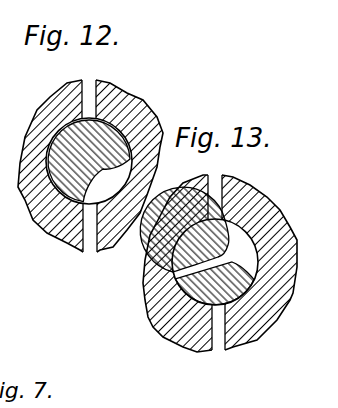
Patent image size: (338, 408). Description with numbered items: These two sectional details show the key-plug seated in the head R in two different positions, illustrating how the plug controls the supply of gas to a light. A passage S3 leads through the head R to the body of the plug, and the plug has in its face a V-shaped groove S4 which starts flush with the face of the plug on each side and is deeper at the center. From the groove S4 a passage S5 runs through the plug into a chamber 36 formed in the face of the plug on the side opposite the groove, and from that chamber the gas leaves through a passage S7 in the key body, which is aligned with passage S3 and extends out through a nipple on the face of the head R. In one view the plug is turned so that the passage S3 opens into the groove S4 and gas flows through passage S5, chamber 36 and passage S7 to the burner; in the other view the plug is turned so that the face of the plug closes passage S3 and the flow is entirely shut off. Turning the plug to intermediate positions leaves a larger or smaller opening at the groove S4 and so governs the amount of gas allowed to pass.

In FIG. 12, the head R is at (90, 166).
In FIG. 13, the head R is at (220, 259).
In FIG. 12, the passage S3 is at (92, 95).
In FIG. 13, the passage S3 is at (217, 188).
In FIG. 12, the V-shaped groove S4 is at (63, 127).
In FIG. 13, the V-shaped groove S4 is at (173, 270).
In FIG. 12, the passage S5 is at (63, 132).
In FIG. 13, the passage S5 is at (180, 290).
In FIG. 12, the passage S7 is at (91, 249).
In FIG. 13, the passage S7 is at (218, 350).
In FIG. 12, the chamber 36 is at (121, 201).
In FIG. 13, the chamber 36 is at (234, 252).